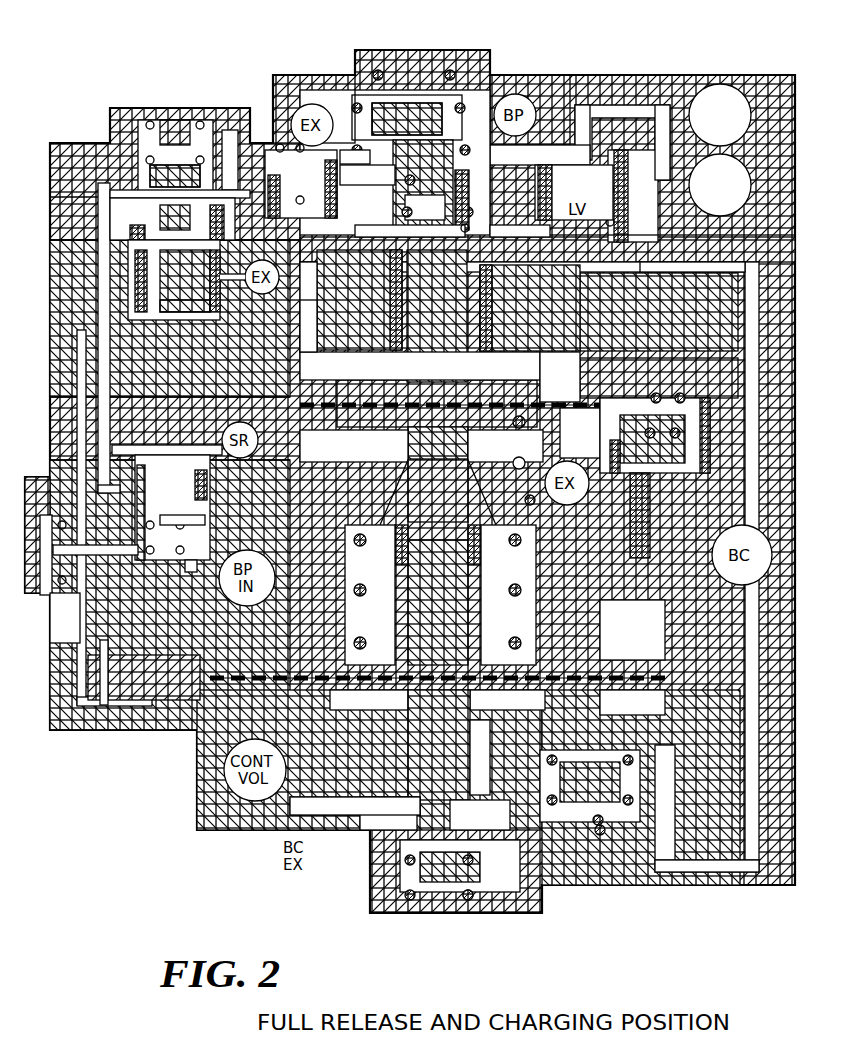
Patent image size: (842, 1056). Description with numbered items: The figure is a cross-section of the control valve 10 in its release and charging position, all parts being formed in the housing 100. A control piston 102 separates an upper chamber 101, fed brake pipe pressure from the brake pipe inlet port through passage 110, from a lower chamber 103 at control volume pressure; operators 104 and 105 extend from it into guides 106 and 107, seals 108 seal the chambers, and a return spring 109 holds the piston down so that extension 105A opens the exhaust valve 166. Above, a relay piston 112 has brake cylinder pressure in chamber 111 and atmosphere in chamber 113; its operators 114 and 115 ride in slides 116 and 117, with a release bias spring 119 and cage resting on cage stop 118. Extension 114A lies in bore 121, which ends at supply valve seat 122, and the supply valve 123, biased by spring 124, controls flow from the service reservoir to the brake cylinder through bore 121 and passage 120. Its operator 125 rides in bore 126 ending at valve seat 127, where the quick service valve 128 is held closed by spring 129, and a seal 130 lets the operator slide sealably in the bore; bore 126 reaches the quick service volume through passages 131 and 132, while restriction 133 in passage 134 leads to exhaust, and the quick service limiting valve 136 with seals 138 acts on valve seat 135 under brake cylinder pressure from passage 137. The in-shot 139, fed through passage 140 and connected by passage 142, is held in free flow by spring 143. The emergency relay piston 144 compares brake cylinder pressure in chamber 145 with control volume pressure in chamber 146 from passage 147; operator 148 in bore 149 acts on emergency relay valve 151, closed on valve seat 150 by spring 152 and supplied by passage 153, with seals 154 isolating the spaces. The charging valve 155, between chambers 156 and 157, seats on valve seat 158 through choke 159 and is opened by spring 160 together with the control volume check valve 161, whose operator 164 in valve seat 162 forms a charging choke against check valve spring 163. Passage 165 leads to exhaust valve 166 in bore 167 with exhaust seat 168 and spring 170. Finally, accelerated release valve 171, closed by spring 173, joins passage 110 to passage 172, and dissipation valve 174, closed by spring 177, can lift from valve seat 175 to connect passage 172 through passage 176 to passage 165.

The control valve 10 is at (695, 74).
The housing 100 is at (752, 82).
The upper chamber 101 is at (576, 631).
The control piston 102 is at (602, 648).
The lower chamber 103 is at (646, 710).
The operator 104 is at (453, 633).
The operator 105 is at (448, 715).
The extension of operator 105A is at (473, 800).
The guide 106 is at (467, 545).
The guide 107 is at (385, 795).
The seal 108 is at (477, 333).
The control piston return spring 109 is at (297, 810).
The passage 110 is at (635, 543).
The upper chamber 111 is at (527, 379).
The relay piston 112 is at (557, 377).
The lower chamber 113 is at (576, 439).
The operator 114 is at (410, 373).
The extension of operator 114A is at (427, 338).
The operator 115 is at (417, 442).
The slide 116 is at (440, 285).
The slide 117 is at (438, 492).
The cage stop 118 is at (519, 460).
The release bias spring 119 is at (537, 503).
The passage 120 is at (690, 270).
The bore 121 is at (413, 233).
The supply valve seat 122 is at (463, 233).
The supply valve 123 is at (500, 233).
The spring 124 is at (410, 220).
The operator 125 is at (422, 152).
The bore 126 is at (543, 133).
The valve seat 127 is at (400, 150).
The quick service valve 128 is at (420, 130).
The spring 129 is at (383, 72).
The seal 130 is at (470, 190).
The passage 131 is at (528, 135).
The passage 132 is at (600, 110).
The restriction 133 is at (668, 150).
The passage 134 is at (655, 150).
The valve seat 135 is at (578, 150).
The quick service limiting valve 136 is at (616, 200).
The passage 137 is at (582, 322).
The seals 138 is at (613, 167).
The in-shot 139 is at (329, 304).
The passage 140 is at (300, 343).
The passage 142 is at (250, 108).
The in-shot spring 143 is at (283, 137).
The emergency relay piston 144 is at (165, 308).
The upper chamber 145 is at (140, 222).
The lower chamber 146 is at (182, 310).
The passage 147 is at (60, 370).
The operator 148 is at (165, 197).
The bore 149 is at (157, 190).
The valve seat 150 is at (232, 140).
The emergency relay valve 151 is at (173, 180).
The spring 152 is at (151, 125).
The passage 153 is at (100, 347).
The seals 154 is at (190, 213).
The charging valve 155 is at (207, 490).
The chamber 156 is at (60, 652).
The chamber 157 is at (150, 612).
The valve seat 158 is at (200, 612).
The charging and stability choke 159 is at (193, 563).
The pressure spring 160 is at (197, 530).
The control volume check valve 161 is at (53, 600).
The valve seat 162 is at (113, 443).
The check valve spring 163 is at (63, 477).
The operator 164 is at (77, 600).
The passage 165 is at (682, 870).
The exhaust valve 166 is at (440, 882).
The bore 167 is at (477, 812).
The exhaust seat 168 is at (347, 830).
The spring 170 is at (473, 897).
The accelerated release valve 171 is at (697, 447).
The passage 172 is at (676, 542).
The spring 173 is at (683, 390).
The dissipation valve 174 is at (613, 750).
The valve seat 175 is at (600, 835).
The passage 176 is at (598, 840).
The spring 177 is at (645, 808).